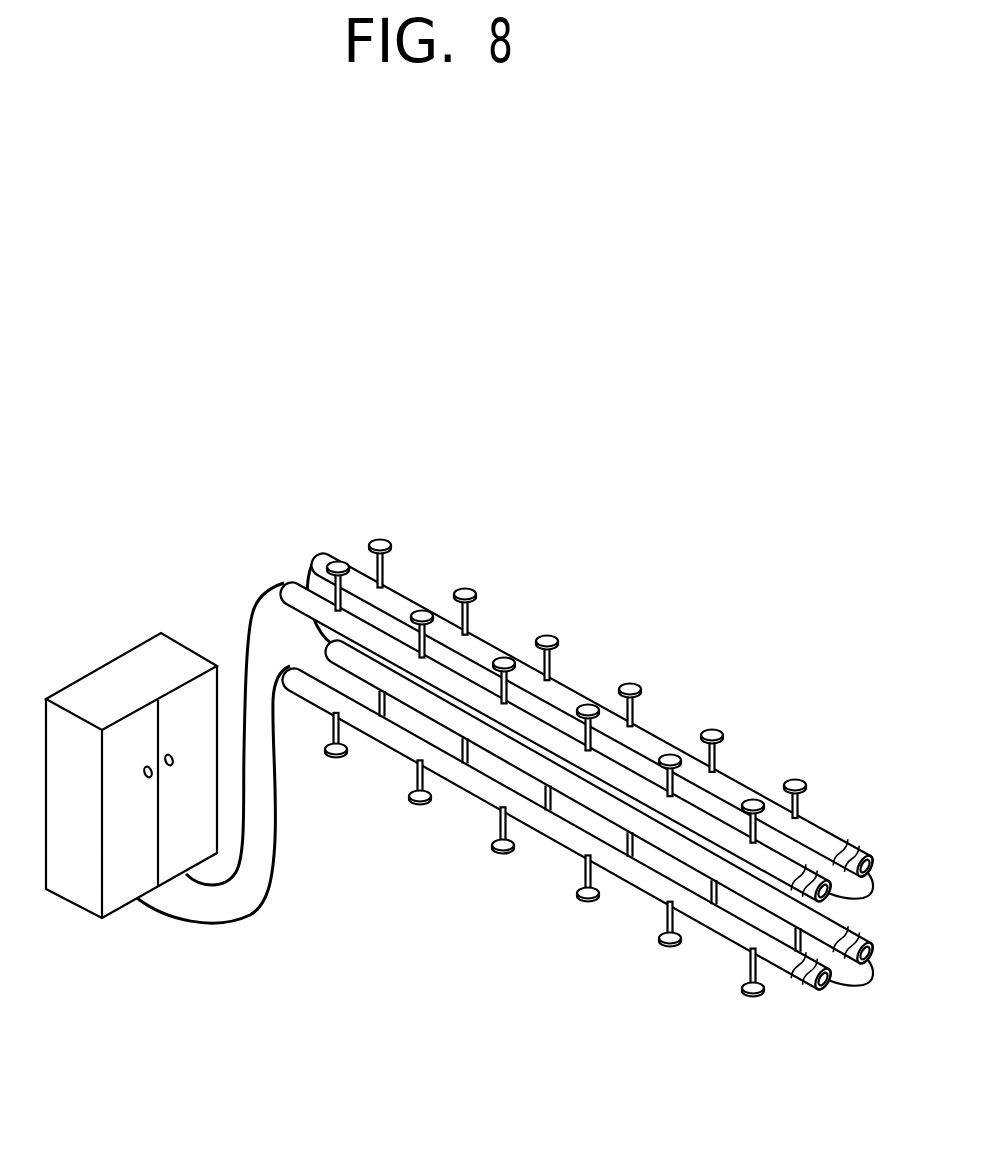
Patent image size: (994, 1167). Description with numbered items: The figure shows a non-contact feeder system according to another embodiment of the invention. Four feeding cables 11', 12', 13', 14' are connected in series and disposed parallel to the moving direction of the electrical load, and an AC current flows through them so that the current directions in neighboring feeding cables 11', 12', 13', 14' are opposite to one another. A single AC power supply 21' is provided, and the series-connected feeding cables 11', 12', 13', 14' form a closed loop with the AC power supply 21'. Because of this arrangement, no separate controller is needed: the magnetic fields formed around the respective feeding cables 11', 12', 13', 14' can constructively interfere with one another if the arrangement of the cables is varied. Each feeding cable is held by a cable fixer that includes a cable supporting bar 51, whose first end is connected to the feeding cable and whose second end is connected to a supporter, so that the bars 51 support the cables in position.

The feeding cable 11' is at (555, 711).
The feeding cable 12' is at (592, 714).
The feeding cable 13' is at (556, 828).
The feeding cable 14' is at (599, 801).
The AC power supply 21' is at (131, 816).
The cable supporting bar 51 is at (637, 702).